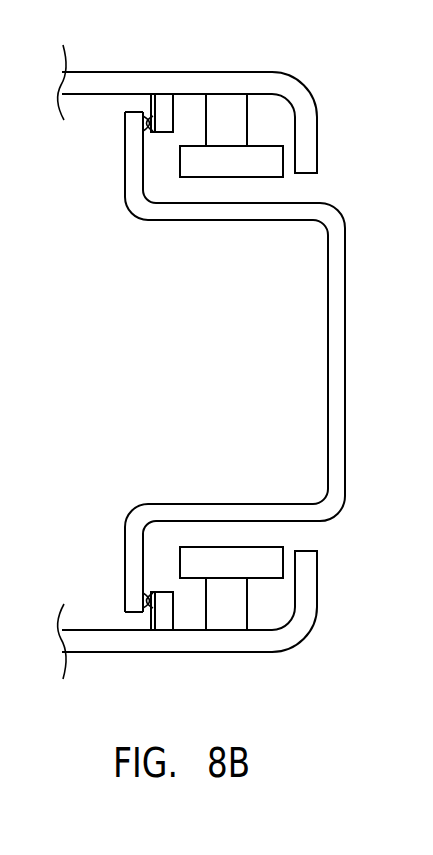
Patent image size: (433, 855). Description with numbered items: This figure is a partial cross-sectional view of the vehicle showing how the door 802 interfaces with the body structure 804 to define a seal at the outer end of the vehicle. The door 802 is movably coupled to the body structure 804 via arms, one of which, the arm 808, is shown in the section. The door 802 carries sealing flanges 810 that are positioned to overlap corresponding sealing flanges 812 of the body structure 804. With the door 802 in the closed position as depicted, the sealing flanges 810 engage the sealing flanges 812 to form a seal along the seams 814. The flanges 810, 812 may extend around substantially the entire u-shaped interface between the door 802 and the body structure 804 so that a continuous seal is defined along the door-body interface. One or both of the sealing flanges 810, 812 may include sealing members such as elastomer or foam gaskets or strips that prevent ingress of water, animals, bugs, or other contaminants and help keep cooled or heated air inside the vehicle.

The door 802 is at (233, 362).
The body structure 804 is at (253, 362).
The arm 808 is at (231, 362).
The sealing flange 810 is at (173, 116).
The sealing flange 812 is at (100, 362).
The seam 814 is at (147, 363).